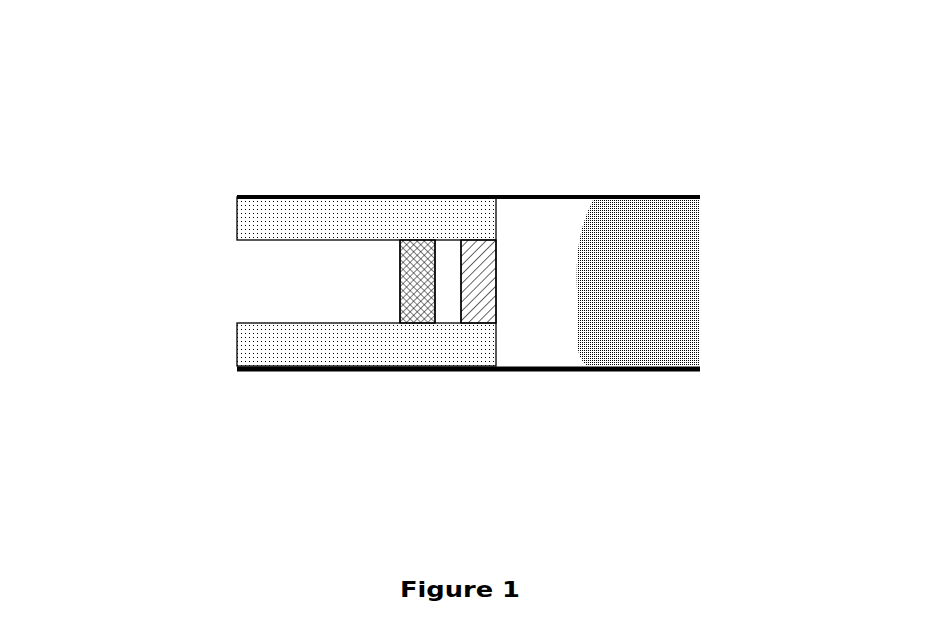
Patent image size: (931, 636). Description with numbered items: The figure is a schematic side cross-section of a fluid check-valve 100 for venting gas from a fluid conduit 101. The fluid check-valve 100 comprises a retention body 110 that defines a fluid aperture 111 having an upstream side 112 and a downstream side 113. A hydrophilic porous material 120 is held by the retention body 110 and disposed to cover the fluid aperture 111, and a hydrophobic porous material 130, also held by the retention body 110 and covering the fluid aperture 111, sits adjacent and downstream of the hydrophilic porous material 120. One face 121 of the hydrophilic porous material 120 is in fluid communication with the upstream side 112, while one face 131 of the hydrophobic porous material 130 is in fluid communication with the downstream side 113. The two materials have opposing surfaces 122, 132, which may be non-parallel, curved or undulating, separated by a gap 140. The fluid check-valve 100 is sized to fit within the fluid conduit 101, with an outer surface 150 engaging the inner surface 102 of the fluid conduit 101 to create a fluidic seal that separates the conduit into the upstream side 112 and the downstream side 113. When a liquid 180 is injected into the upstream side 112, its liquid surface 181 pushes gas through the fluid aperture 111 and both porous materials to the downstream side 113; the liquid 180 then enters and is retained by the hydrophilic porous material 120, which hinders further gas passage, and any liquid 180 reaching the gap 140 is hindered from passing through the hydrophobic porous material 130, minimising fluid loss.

The fluid check-valve 100 is at (436, 275).
The fluid conduit 101 is at (506, 195).
The inner surface of the fluid conduit 102 is at (556, 366).
The retention body 110 is at (235, 216).
The fluid aperture 111 is at (505, 283).
The upstream side 112 is at (534, 243).
The downstream side 113 is at (317, 296).
The hydrophilic porous material 120 is at (477, 326).
The face of the hydrophilic porous material 121 is at (496, 298).
The opposing surface of the hydrophilic porous material 122 is at (455, 273).
The hydrophobic porous material 130 is at (414, 325).
The face of the hydrophobic porous material 131 is at (401, 277).
The opposing surface of the hydrophobic porous material 132 is at (435, 277).
The gap 140 is at (443, 240).
The outer surface 150 is at (375, 197).
The liquid 180 is at (647, 262).
The liquid surface 181 is at (577, 276).